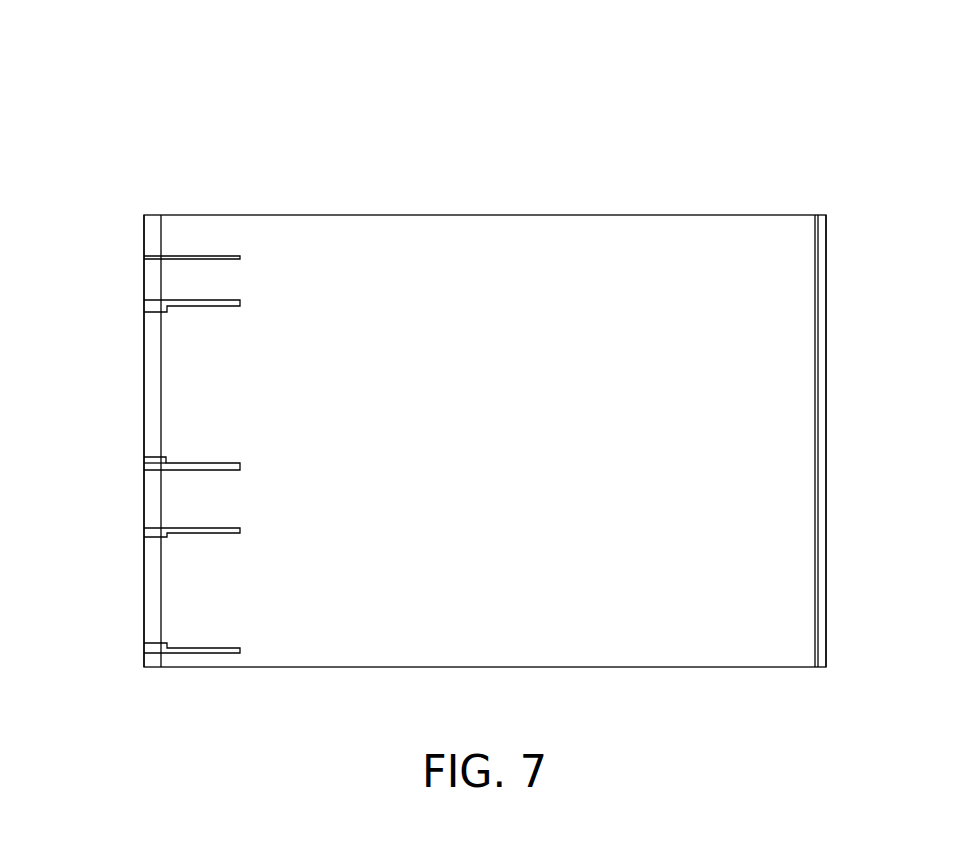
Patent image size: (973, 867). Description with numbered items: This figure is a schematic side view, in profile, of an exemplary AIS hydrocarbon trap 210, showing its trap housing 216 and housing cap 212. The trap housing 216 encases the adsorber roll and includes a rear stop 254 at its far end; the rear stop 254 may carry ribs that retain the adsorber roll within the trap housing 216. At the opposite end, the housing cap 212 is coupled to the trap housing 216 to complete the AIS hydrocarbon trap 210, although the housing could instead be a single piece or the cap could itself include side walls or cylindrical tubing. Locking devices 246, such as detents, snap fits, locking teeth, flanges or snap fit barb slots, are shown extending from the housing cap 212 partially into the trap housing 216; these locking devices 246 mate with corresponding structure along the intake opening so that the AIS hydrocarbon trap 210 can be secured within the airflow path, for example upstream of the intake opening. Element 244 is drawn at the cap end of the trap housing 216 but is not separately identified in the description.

The AIS hydrocarbon trap 210 is at (535, 98).
The housing cap 212 is at (144, 214).
The trap housing 216 is at (393, 215).
The side rail 244 is at (144, 404).
The locking devices 246 is at (185, 488).
The rear stop 254 is at (826, 332).